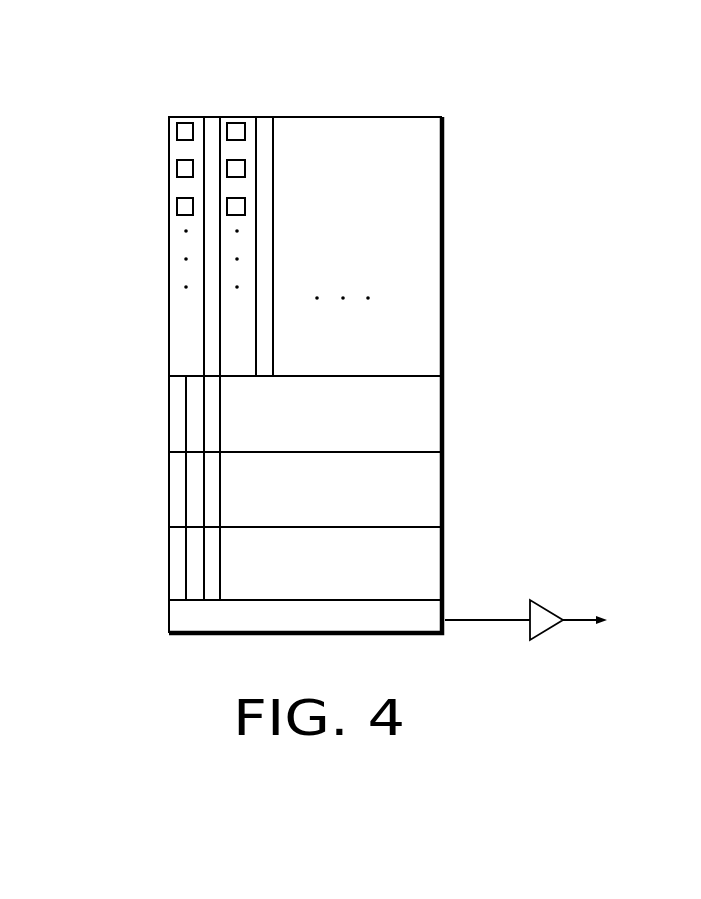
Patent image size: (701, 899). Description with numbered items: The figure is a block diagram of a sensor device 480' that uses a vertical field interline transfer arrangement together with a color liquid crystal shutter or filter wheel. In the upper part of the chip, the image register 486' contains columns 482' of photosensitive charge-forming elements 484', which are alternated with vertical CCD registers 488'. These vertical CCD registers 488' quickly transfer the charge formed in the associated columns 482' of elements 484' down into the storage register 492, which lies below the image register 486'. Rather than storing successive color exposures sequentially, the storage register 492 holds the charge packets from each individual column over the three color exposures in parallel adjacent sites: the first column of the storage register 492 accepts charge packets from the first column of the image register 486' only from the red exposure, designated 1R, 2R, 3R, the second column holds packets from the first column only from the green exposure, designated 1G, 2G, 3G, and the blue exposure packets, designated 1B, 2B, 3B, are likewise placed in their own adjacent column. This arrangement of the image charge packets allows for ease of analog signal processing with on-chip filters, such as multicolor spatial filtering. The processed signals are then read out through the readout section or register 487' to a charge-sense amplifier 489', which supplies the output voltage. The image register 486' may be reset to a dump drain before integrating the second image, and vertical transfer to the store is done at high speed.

The sensor device 480' is at (228, 353).
The columns of photosensitive charge-forming elements 482' is at (127, 284).
The photosensitive charge-forming elements 484' is at (130, 169).
The image register 486' is at (361, 247).
The readout section or register 487' is at (314, 648).
The vertical CCD registers 488' is at (238, 312).
The charge-sense amplifier 489' is at (603, 658).
The storage register 492 is at (472, 378).
The red exposure charge packets 1R is at (177, 392).
The green exposure charge packets 1G is at (195, 410).
The blue exposure charge packets 1B is at (212, 438).
The red exposure charge packets 2R is at (177, 474).
The green exposure charge packets 2G is at (195, 497).
The blue exposure charge packets 2B is at (212, 512).
The blue exposure charge packets 3B is at (212, 540).
The green exposure charge packets 3G is at (195, 568).
The red exposure charge packets 3R is at (177, 588).